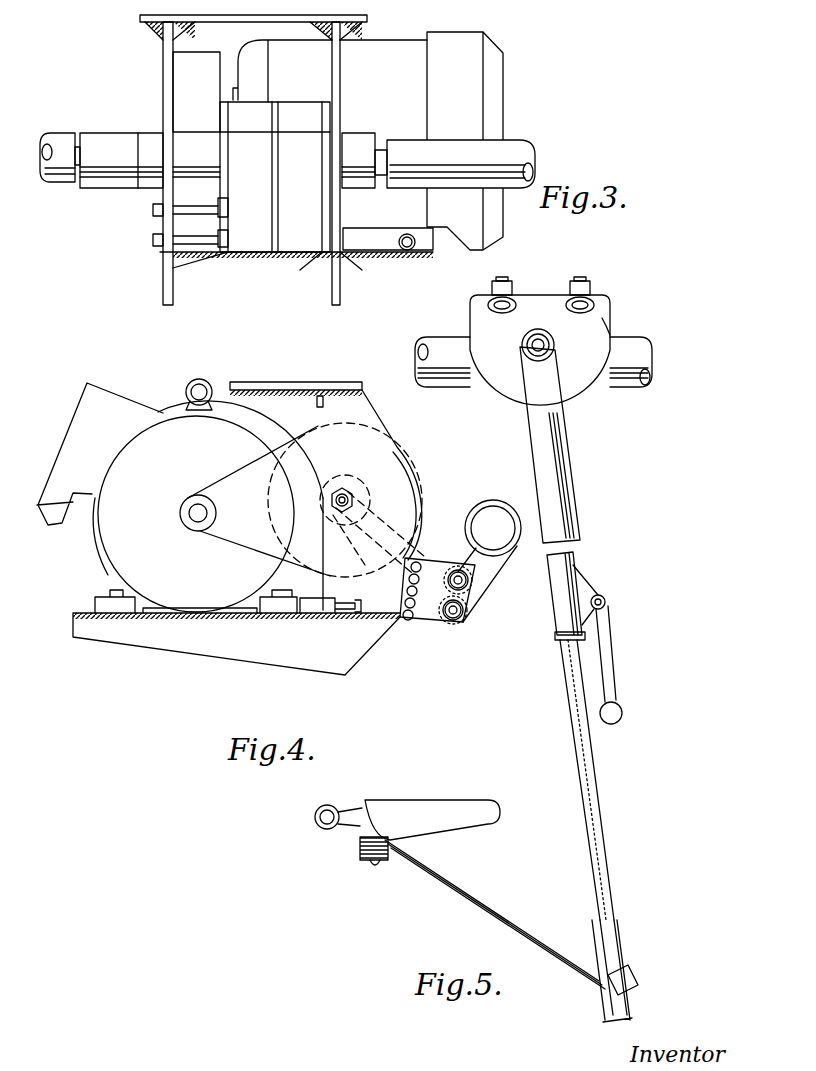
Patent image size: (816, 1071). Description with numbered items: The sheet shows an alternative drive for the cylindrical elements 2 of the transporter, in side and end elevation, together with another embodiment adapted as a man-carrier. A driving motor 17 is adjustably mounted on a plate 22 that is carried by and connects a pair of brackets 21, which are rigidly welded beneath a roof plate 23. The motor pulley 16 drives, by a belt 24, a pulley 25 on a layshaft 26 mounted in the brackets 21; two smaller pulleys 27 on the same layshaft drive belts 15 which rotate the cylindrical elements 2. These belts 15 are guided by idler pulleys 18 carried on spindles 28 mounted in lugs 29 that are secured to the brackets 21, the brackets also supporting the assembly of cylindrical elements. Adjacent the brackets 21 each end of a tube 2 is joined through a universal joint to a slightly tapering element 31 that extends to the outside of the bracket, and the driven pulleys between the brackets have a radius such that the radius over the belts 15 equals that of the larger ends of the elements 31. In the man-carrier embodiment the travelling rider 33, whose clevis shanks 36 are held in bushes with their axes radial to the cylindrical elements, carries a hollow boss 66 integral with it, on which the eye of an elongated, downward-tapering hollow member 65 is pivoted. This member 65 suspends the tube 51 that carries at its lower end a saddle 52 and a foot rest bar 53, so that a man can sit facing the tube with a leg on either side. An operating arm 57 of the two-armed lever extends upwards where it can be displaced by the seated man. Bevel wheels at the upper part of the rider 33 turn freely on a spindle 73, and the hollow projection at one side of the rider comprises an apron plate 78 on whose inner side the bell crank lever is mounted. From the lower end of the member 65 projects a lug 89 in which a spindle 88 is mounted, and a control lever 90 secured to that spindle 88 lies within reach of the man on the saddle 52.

In FIG. 3, the cylindrical elements 2 is at (62, 140).
In FIG. 4, the cylindrical elements 2 is at (496, 502).
In FIG. 5, the cylindrical elements 2 is at (620, 355).
In FIG. 3, the belts 15 is at (276, 177).
In FIG. 4, the belts 15 is at (470, 598).
In FIG. 4, the motor pulley 16 is at (216, 513).
In FIG. 3, the driving motor 17 is at (368, 141).
In FIG. 4, the driving motor 17 is at (199, 496).
In FIG. 3, the idler pulleys 18 is at (222, 240).
In FIG. 4, the idler pulleys 18 is at (457, 571).
In FIG. 3, the brackets 21 is at (165, 70).
In FIG. 4, the brackets 21 is at (370, 660).
In FIG. 3, the plate 22 is at (426, 250).
In FIG. 4, the plate 22 is at (273, 617).
In FIG. 3, the roof plate 23 is at (150, 22).
In FIG. 4, the roof plate 23 is at (297, 384).
In FIG. 4, the belt 24 is at (225, 476).
In FIG. 3, the pulley 25 is at (200, 92).
In FIG. 4, the pulley 25 is at (345, 500).
In FIG. 4, the layshaft 26 is at (347, 488).
In FIG. 4, the smaller pulleys 27 is at (379, 524).
In FIG. 3, the spindles 28 is at (185, 238).
In FIG. 4, the spindles 28 is at (468, 583).
In FIG. 4, the lugs 29 is at (432, 625).
In FIG. 3, the tapering element 31 is at (115, 140).
In FIG. 5, the travelling rider 33 is at (600, 315).
In FIG. 5, the clevis shanks 36 is at (490, 305).
In FIG. 5, the tube 51 is at (592, 827).
In FIG. 5, the saddle 52 is at (437, 802).
In FIG. 5, the foot rest bar 53 is at (625, 980).
In FIG. 5, the operating arm 57 is at (548, 333).
In FIG. 5, the hollow member 65 is at (568, 455).
In FIG. 5, the hollow boss 66 is at (532, 342).
In FIG. 5, the spindle 73 is at (570, 283).
In FIG. 5, the apron plate 78 is at (510, 390).
In FIG. 5, the spindle 88 is at (606, 602).
In FIG. 5, the lug 89 is at (590, 572).
In FIG. 5, the control lever 90 is at (612, 635).